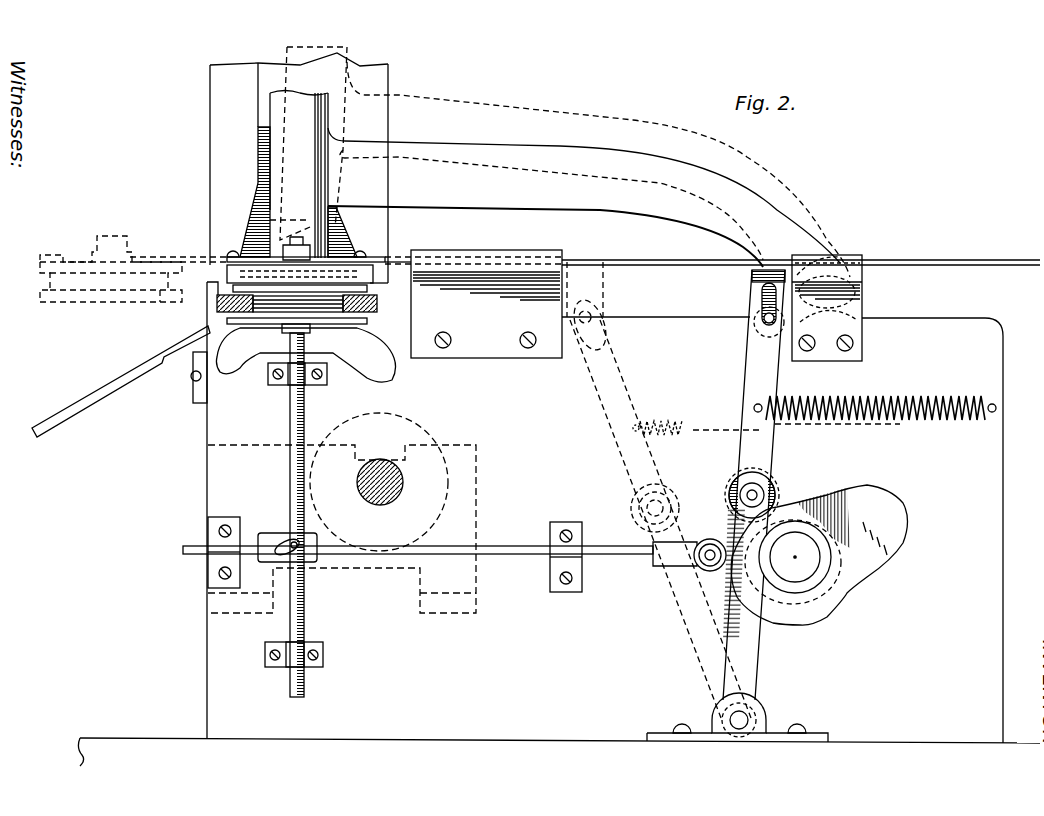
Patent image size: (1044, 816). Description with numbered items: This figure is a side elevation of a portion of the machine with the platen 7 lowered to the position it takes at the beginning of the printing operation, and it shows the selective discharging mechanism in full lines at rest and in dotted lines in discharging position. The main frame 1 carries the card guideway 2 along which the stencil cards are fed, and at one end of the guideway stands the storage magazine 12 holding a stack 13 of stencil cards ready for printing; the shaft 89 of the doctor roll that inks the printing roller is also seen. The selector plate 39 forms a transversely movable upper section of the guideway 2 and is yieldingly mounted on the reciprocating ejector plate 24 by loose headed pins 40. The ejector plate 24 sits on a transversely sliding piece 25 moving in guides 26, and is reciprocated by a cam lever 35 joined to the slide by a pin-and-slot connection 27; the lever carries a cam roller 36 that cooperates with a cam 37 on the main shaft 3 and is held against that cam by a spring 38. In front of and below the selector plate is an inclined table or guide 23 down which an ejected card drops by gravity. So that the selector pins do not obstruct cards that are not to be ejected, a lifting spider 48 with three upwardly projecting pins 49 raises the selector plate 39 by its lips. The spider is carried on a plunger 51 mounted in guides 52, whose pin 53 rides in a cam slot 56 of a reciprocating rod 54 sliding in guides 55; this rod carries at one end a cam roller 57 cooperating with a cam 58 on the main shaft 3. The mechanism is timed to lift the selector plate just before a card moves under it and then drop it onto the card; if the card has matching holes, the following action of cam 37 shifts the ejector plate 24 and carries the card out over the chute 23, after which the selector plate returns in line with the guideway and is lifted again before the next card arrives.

The main frame 1 is at (215, 428).
The card guideway 2 is at (378, 303).
The main shaft 3 is at (800, 567).
The platen 7 is at (337, 283).
The storage magazine 12 is at (222, 190).
The stack of stencil cards 13 is at (258, 185).
The inclined table or guide 23 is at (115, 390).
The ejector plate 24 is at (230, 262).
The transversely sliding piece 25 is at (669, 260).
The guides 26 is at (503, 347).
The pin-and-slot connection 27 is at (764, 319).
The cam lever 35 is at (760, 377).
The cam roller 36 is at (775, 490).
The cam 37 is at (893, 511).
The spring 38 is at (940, 404).
The selector plate 39 is at (217, 302).
The loose headed pins 40 is at (372, 273).
The lifting spider 48 is at (328, 325).
The upwardly projecting pins 49 is at (367, 320).
The plunger 51 is at (313, 397).
The guides 52 is at (282, 385).
The pin 53 is at (293, 537).
The reciprocating rod 54 is at (505, 550).
The guides 55 is at (210, 577).
The cam slot 56 is at (300, 560).
The cam roller 57 is at (703, 572).
The cam 58 is at (808, 613).
The shaft 89 is at (393, 462).